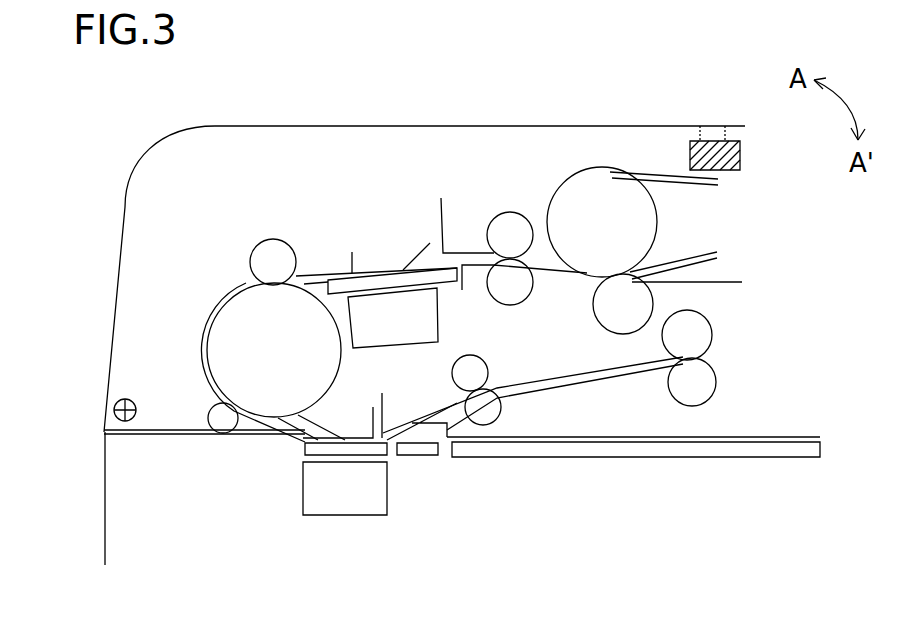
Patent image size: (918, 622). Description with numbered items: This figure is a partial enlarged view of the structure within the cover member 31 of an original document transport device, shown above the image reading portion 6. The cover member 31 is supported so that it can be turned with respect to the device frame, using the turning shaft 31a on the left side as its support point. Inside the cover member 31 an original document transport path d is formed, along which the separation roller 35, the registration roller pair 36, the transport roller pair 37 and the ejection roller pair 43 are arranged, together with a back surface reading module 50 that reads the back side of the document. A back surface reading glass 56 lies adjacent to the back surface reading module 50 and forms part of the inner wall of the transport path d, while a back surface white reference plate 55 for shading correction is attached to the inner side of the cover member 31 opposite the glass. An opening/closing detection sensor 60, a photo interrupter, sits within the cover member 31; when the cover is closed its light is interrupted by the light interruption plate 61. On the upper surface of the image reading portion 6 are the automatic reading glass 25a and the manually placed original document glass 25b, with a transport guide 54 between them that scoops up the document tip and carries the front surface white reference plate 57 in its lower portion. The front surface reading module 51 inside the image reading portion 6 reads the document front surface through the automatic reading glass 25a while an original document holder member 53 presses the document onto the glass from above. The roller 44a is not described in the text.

The cover member 31 is at (278, 126).
The turning shaft 31a is at (113, 420).
The image reading portion 6 is at (104, 531).
The original document transport path d is at (208, 318).
The back surface reading glass 56 is at (350, 287).
The back surface white reference plate 55 is at (382, 268).
The back surface reading module 50 is at (428, 317).
The registration roller pair 36 is at (488, 229).
The fixing roller 44a is at (553, 206).
The separation roller 35 is at (602, 314).
The ejection roller pair 43 is at (707, 380).
The transport roller pair 37 is at (500, 405).
The original document holder member 53 is at (355, 436).
The transport guide 54 is at (413, 423).
The front surface white reference plate 57 is at (418, 449).
The automatic reading glass 25a is at (305, 448).
The manually placed original document glass 25b is at (688, 448).
The front surface reading module 51 is at (350, 515).
The opening/closing detection sensor 60 is at (740, 155).
The light interruption plate 61 is at (713, 126).